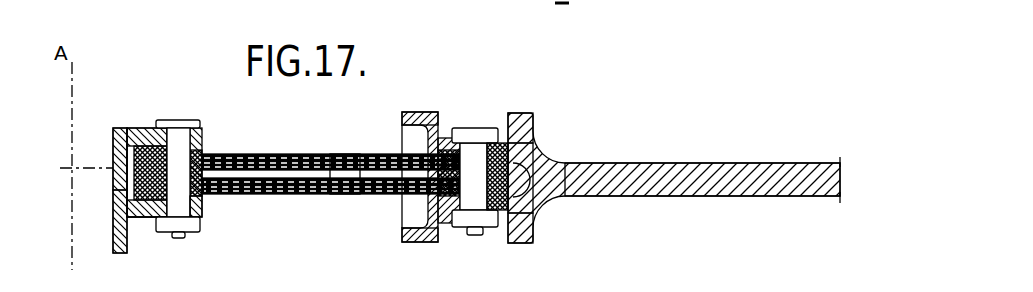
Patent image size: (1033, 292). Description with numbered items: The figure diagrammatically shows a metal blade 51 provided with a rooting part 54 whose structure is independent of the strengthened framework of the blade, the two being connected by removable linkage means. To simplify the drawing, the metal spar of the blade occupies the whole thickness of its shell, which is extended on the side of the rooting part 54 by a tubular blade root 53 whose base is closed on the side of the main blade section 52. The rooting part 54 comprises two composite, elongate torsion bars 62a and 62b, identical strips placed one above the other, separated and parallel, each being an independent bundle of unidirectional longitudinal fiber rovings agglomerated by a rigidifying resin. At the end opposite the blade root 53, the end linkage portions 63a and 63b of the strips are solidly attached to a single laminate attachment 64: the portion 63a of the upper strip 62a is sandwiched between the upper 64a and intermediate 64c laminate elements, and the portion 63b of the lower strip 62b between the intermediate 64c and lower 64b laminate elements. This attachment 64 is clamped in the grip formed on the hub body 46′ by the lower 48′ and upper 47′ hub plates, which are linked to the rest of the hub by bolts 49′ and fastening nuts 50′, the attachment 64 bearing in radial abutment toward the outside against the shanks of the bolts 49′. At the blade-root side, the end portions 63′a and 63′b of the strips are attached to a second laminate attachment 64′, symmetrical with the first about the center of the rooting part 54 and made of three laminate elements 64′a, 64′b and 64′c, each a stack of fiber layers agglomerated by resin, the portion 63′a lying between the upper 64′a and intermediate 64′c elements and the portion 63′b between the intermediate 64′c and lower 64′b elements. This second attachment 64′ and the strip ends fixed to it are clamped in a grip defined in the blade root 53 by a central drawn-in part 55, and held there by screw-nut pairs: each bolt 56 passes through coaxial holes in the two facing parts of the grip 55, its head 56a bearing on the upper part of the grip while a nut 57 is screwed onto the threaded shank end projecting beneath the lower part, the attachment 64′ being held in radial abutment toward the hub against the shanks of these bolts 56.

The hub body 46′ is at (113, 138).
The upper hub plate 47′ is at (132, 132).
The lower hub plate 48′ is at (197, 203).
The bolt 49′ is at (180, 143).
The fastening nut 50′ is at (193, 229).
The metal blade 51 is at (735, 163).
The main blade section 52 is at (726, 178).
The tubular blade root 53 is at (422, 229).
The rooting part 54 is at (345, 154).
The central drawn-in part 55 is at (455, 213).
The bolt 56 is at (473, 150).
The bolt head 56a is at (466, 132).
The nut 57 is at (495, 225).
The upper torsion bar 62a is at (278, 154).
The lower torsion bar 62b is at (297, 194).
The end linkage portion 63a is at (113, 150).
The end linkage portion 63b is at (115, 195).
The end portion 63′a is at (426, 152).
The end portion 63′b is at (426, 193).
The laminate attachment 64 is at (203, 197).
The upper laminate element 64a is at (150, 132).
The lower laminate element 64b is at (145, 218).
The intermediate laminate element 64c is at (115, 182).
The second laminate attachment 64′ is at (519, 176).
The upper laminate element 64′a is at (547, 80).
The lower laminate element 64′b is at (505, 223).
The intermediate laminate element 64′c is at (510, 207).